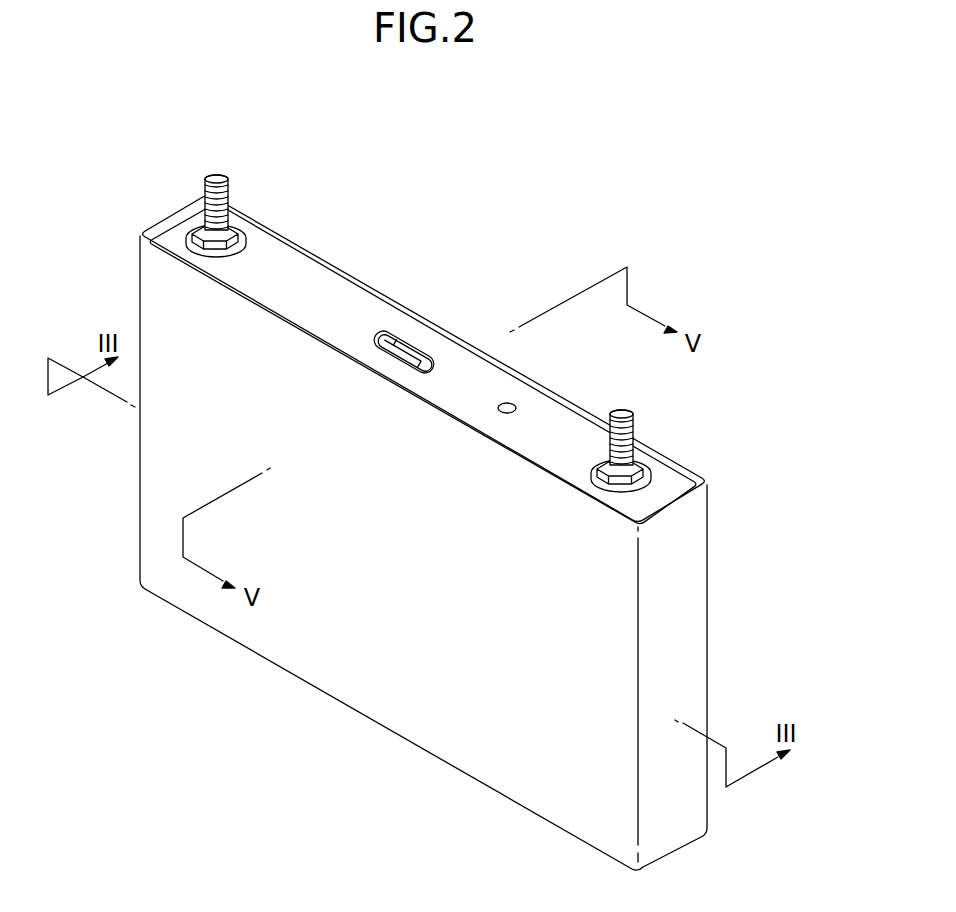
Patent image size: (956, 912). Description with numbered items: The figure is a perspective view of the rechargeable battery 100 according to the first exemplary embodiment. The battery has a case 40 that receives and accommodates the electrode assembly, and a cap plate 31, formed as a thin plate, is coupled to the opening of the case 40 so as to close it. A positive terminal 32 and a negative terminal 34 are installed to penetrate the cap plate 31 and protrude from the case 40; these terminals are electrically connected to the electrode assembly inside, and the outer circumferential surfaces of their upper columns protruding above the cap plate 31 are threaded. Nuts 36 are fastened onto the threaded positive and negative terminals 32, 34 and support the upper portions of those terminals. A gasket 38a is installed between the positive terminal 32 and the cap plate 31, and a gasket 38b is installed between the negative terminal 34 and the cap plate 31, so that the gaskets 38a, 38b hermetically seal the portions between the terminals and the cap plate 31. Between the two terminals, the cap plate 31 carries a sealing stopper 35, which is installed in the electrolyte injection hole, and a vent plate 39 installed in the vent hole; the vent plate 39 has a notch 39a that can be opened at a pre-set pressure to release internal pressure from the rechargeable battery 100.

The rechargeable battery 100 is at (490, 209).
The cap plate 31 is at (342, 302).
The positive terminal 32 is at (217, 175).
The negative terminal 34 is at (622, 411).
The sealing stopper 35 is at (509, 403).
The nut 36 is at (229, 213).
The gasket 38a is at (253, 222).
The gasket 38b is at (656, 468).
The vent plate 39 is at (401, 335).
The notch 39a is at (414, 357).
The case 40 is at (380, 685).